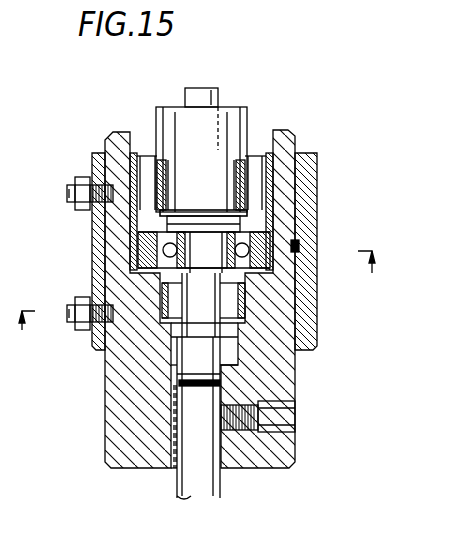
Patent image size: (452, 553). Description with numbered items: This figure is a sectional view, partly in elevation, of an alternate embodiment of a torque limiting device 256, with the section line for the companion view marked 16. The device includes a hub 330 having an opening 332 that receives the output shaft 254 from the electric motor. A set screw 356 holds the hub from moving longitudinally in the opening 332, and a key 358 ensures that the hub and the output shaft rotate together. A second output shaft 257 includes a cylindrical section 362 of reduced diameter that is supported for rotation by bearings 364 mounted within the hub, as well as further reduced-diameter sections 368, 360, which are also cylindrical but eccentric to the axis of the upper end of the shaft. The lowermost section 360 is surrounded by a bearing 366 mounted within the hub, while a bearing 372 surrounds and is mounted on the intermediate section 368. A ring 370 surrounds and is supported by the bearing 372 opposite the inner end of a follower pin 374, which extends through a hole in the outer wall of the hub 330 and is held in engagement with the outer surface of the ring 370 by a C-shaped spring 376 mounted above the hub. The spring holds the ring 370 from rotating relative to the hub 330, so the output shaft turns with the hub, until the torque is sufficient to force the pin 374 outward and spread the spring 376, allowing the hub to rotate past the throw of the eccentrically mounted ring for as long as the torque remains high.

The output shaft 254 is at (220, 485).
The torque limiting device 256 is at (103, 428).
The output shaft 257 is at (220, 91).
The hub 330 is at (287, 390).
The opening 332 is at (222, 385).
The set screw 356 is at (258, 423).
The key 358 is at (173, 468).
The lowermost section 360 is at (128, 343).
The cylindrical section 362 is at (250, 190).
The bearings 364 is at (289, 133).
The bearing 366 is at (250, 302).
The intermediate section 368 is at (247, 228).
The ring 370 is at (150, 249).
The bearing 372 is at (130, 237).
The follower pin 374 is at (310, 245).
The C-shaped spring 376 is at (144, 219).
The section line 16- 16 is at (196, 304).